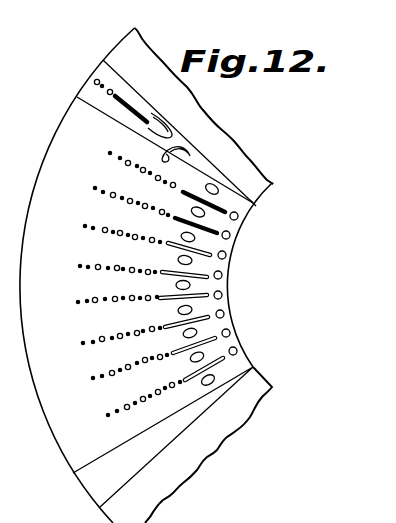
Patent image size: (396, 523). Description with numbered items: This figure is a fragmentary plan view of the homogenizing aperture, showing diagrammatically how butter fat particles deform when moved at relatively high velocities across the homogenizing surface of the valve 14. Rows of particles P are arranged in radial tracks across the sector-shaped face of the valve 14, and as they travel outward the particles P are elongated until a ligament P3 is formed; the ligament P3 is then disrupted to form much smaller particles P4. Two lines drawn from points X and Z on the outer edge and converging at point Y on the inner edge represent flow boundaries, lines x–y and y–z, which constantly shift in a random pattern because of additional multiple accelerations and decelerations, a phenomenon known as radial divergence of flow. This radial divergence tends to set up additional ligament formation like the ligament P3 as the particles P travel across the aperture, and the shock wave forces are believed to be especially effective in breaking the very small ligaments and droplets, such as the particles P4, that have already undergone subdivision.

The valve 14 is at (245, 170).
The ligament P3 is at (212, 318).
The particles P is at (224, 358).
The smaller particles P4 is at (152, 390).
The boundary line point X is at (172, 126).
The boundary line point Y is at (258, 208).
The boundary line point Z is at (157, 146).